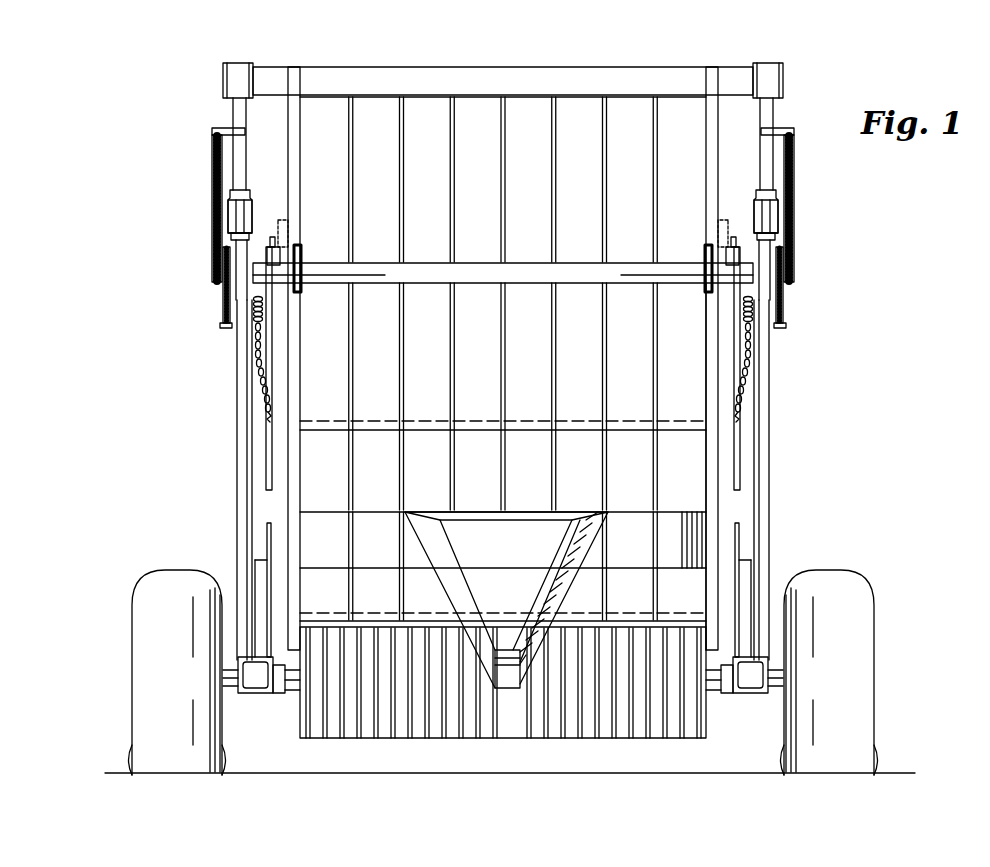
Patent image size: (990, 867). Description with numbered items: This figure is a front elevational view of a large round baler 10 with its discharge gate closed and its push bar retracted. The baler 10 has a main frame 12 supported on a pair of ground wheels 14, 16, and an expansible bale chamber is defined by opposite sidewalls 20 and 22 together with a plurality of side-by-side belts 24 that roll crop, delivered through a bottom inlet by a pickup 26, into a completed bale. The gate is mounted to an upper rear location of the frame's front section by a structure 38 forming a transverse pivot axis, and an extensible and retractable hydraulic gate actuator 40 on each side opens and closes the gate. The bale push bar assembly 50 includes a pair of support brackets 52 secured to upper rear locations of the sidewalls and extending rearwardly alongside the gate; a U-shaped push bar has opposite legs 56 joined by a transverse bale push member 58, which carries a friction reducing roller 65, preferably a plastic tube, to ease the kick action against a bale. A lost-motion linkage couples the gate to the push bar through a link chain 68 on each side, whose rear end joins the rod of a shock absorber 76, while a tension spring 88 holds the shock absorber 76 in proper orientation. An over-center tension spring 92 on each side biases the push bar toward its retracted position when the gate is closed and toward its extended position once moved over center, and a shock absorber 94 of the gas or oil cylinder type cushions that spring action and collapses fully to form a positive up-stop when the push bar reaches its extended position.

The baler 10 is at (842, 430).
The main frame 12 is at (285, 530).
The ground wheel 14 is at (133, 607).
The ground wheel 16 is at (855, 571).
The sidewall 20 is at (288, 512).
The sidewall 22 is at (728, 505).
The belts 24 is at (314, 171).
The pickup 26 is at (340, 740).
The structure 38 is at (273, 67).
The hydraulic gate actuator 40 is at (266, 432).
The bale push bar assembly 50 is at (200, 263).
The support bracket 52 is at (232, 106).
The leg 56 is at (237, 467).
The bale push member 58 is at (283, 703).
The friction reducing roller 65 is at (293, 697).
The link chain 68 is at (256, 375).
The shock absorber 76 is at (268, 309).
The tension spring 88 is at (222, 300).
The tension spring 92 is at (213, 185).
The shock absorber 94 is at (250, 228).